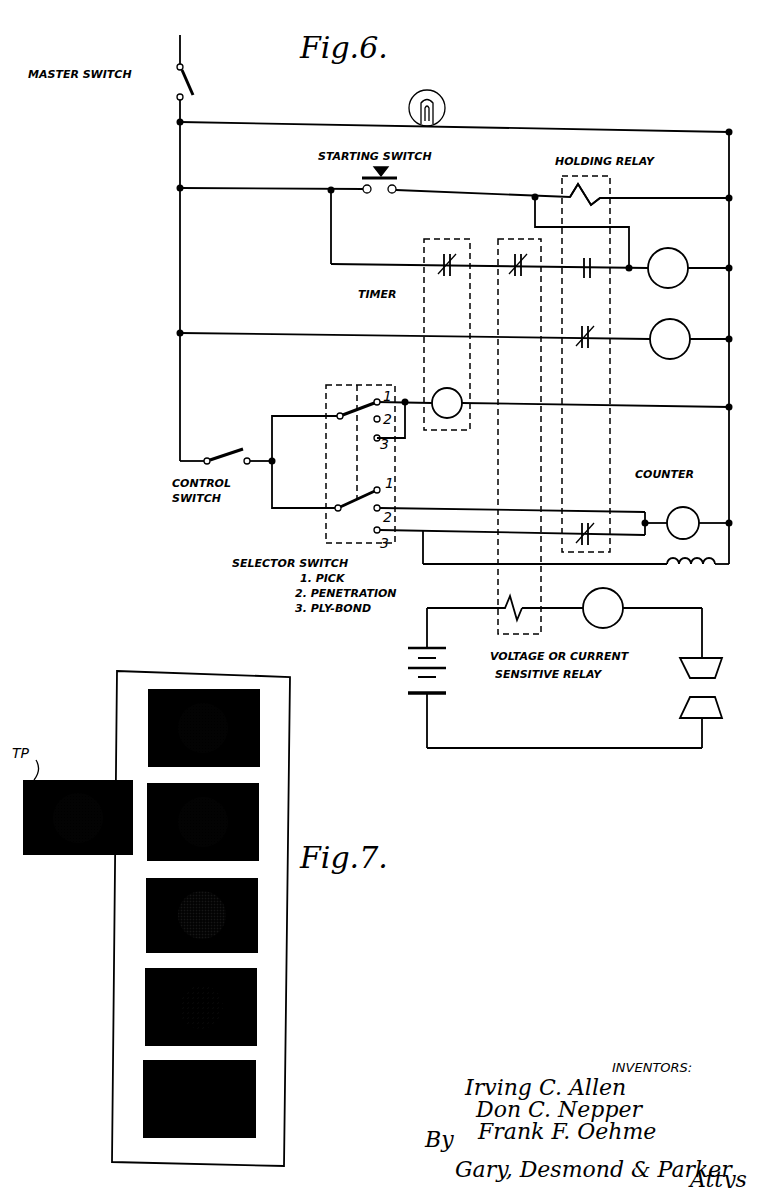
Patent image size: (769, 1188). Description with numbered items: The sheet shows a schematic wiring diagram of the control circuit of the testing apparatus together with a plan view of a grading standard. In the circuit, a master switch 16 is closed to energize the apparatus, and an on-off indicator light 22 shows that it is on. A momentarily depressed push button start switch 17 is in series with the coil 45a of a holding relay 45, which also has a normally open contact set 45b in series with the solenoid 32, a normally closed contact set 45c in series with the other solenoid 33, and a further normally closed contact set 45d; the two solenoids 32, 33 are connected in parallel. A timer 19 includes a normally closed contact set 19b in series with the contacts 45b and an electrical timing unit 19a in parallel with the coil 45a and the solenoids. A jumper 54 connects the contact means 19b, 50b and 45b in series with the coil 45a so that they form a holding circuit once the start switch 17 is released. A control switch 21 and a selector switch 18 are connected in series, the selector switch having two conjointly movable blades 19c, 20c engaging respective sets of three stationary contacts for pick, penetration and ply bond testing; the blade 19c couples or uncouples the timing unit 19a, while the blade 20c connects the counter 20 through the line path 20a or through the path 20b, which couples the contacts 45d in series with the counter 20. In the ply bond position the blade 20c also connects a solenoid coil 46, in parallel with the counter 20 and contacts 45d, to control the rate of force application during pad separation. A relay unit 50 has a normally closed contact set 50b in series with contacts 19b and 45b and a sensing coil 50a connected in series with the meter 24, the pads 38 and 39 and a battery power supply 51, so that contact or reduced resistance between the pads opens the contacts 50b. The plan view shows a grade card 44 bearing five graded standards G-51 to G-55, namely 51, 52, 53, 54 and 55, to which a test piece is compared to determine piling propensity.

In FIG. 6, the on-off toggle switch 16 is at (178, 90).
In FIG. 6, the push button start switch 17 is at (391, 168).
In FIG. 6, the selector switch 18 is at (392, 546).
In FIG. 6, the timer 19 is at (424, 304).
In FIG. 6, the electrical timing unit 19a is at (451, 384).
In FIG. 6, the normally closed contact set 19b is at (447, 276).
In FIG. 6, the movable contact blade 19c is at (338, 410).
In FIG. 6, the electric counter 20 is at (683, 507).
In FIG. 6, the supply path 20a is at (456, 508).
In FIG. 6, the supply path 20b is at (432, 533).
In FIG. 6, the movable contact blade 20c is at (336, 502).
In FIG. 6, the control switch 21 is at (232, 466).
In FIG. 6, the on-off indicator light 22 is at (437, 94).
In FIG. 6, the ammeter 24 is at (622, 604).
In FIG. 6, the solenoid valve 32 is at (668, 268).
In FIG. 6, the solenoid valve 33 is at (670, 339).
In FIG. 6, the pad 38 is at (690, 670).
In FIG. 6, the pad 39 is at (692, 712).
In FIG. 7, the grade card 44 is at (117, 934).
In FIG. 6, the holding relay 45 is at (612, 181).
In FIG. 6, the coil 45a is at (598, 205).
In FIG. 6, the normally open contact means 45b is at (590, 278).
In FIG. 6, the normally closed contact means 45c is at (588, 350).
In FIG. 6, the normally closed contact means 45d is at (590, 545).
In FIG. 6, the solenoid coil 46 is at (686, 572).
In FIG. 6, the relay unit 50 is at (535, 468).
In FIG. 6, the coil 50a is at (512, 600).
In FIG. 6, the normally closed contact set 50b is at (518, 276).
In FIG. 6, the battery power supply 51 is at (446, 676).
In FIG. 7, the battery power supply 51 is at (211, 1099).
In FIG. 7, the graded standard 52 is at (212, 1007).
In FIG. 7, the graded standard 53 is at (213, 915).
In FIG. 6, the jumper 54 is at (535, 212).
In FIG. 7, the jumper 54 is at (214, 822).
In FIG. 7, the graded standard 55 is at (215, 728).